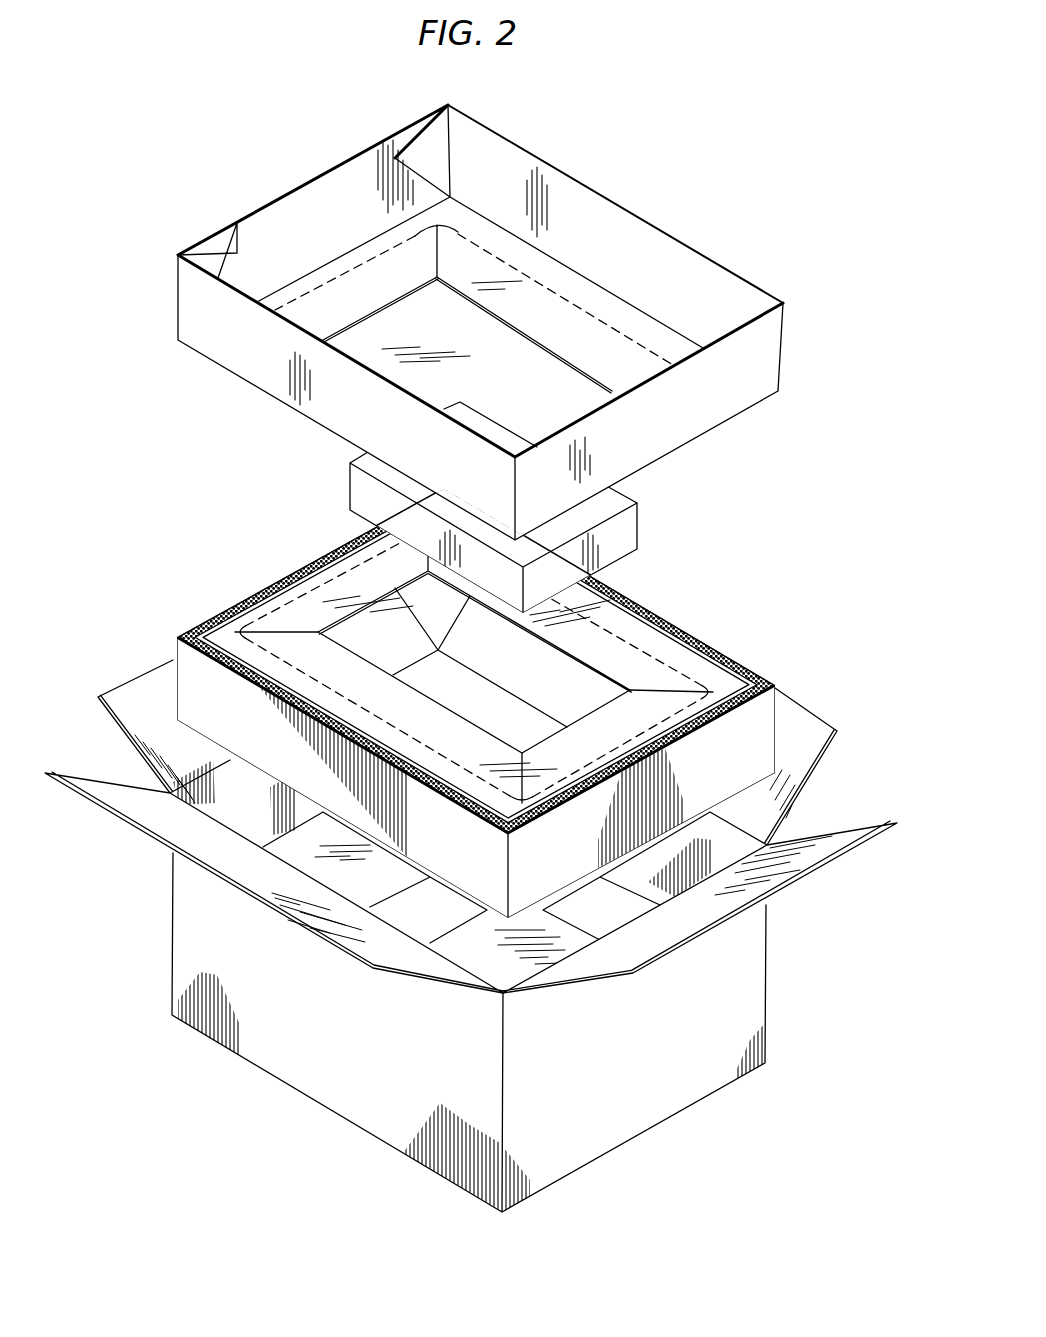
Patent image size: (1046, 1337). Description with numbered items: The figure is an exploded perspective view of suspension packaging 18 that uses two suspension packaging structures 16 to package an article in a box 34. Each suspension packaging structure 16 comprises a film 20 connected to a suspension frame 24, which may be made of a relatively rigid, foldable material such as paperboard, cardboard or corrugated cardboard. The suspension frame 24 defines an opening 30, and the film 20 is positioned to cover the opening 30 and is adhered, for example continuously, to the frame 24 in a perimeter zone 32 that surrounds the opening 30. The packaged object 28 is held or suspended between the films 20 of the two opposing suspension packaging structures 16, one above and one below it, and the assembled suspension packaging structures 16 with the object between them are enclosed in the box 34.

The suspension packaging structure 16 is at (509, 492).
The suspension packaging 18 is at (170, 464).
The film 20 is at (633, 625).
The suspension frame 24 is at (570, 850).
The packaged object 28 is at (627, 527).
The opening 30 is at (597, 688).
The perimeter zone 32 is at (733, 660).
The box 34 is at (635, 1102).